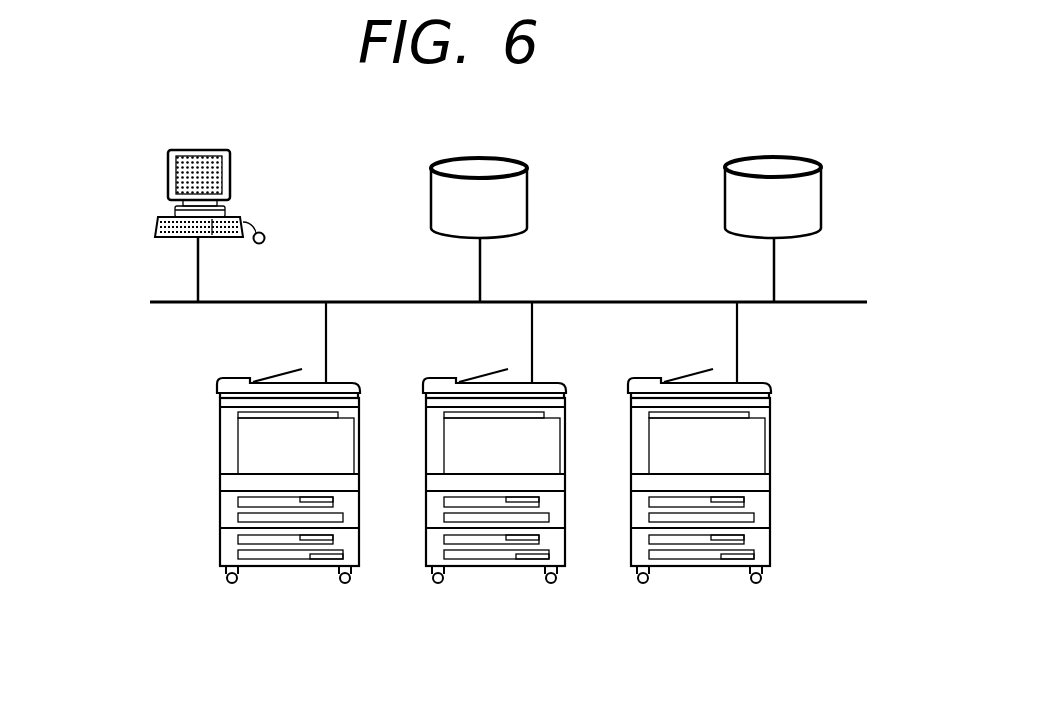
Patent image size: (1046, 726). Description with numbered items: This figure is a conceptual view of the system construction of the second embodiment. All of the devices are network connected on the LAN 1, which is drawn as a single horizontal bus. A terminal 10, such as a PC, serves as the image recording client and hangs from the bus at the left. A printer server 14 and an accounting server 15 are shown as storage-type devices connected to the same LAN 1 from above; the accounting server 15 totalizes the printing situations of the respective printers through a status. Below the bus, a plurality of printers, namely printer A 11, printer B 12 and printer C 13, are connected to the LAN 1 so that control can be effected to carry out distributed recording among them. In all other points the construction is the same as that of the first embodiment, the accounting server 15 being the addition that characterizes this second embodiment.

The LAN 1 is at (848, 298).
The terminal 10 is at (168, 172).
The printer A 11 is at (220, 556).
The printer B 12 is at (426, 556).
The printer C 13 is at (631, 556).
The printer server 14 is at (430, 178).
The accounting server 15 is at (725, 178).